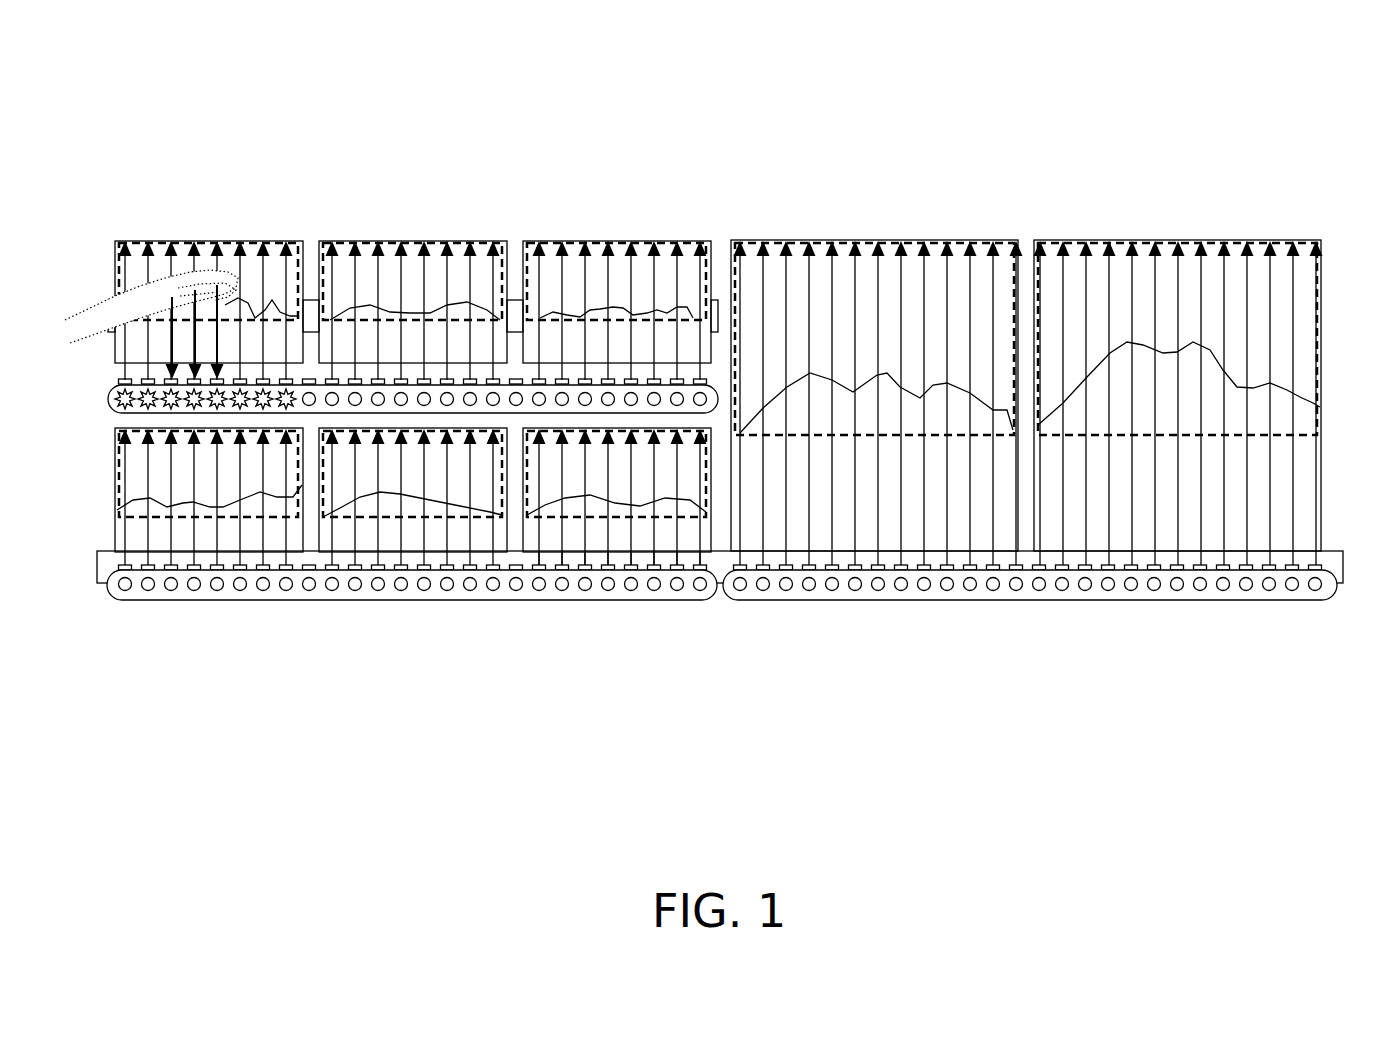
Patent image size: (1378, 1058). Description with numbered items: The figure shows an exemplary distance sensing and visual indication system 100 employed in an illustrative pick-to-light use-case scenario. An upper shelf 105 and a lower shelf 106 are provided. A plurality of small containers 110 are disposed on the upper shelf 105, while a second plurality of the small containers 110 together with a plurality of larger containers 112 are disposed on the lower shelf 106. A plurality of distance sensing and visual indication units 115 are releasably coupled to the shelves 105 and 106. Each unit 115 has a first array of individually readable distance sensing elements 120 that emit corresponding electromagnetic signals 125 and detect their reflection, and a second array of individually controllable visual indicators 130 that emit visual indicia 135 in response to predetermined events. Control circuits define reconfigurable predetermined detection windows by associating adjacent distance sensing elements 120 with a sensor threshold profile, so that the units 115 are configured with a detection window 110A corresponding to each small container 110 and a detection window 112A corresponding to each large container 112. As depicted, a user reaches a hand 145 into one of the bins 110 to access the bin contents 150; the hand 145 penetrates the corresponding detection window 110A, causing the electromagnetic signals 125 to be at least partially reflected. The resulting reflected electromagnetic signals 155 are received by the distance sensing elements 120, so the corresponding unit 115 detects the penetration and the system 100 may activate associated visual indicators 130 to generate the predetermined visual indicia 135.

The distance sensing and visual indication system 100 is at (241, 59).
The upper shelf 105 is at (110, 370).
The lower shelf 106 is at (1327, 557).
The small container 110 is at (137, 240).
The reconfigurable predetermined detection window 110A is at (208, 240).
The larger container 112 is at (778, 240).
The reconfigurable predetermined detection window 112A is at (845, 240).
The distance sensing and visual indication unit 115 is at (700, 600).
The distance sensing element 120 is at (566, 568).
The electromagnetic signal 125 is at (560, 537).
The visual indicator 130 is at (333, 588).
The visual indicia 135 is at (118, 413).
The hand 145 is at (107, 310).
The bin contents 150 is at (253, 313).
The reflected electromagnetic signal 155 is at (175, 373).